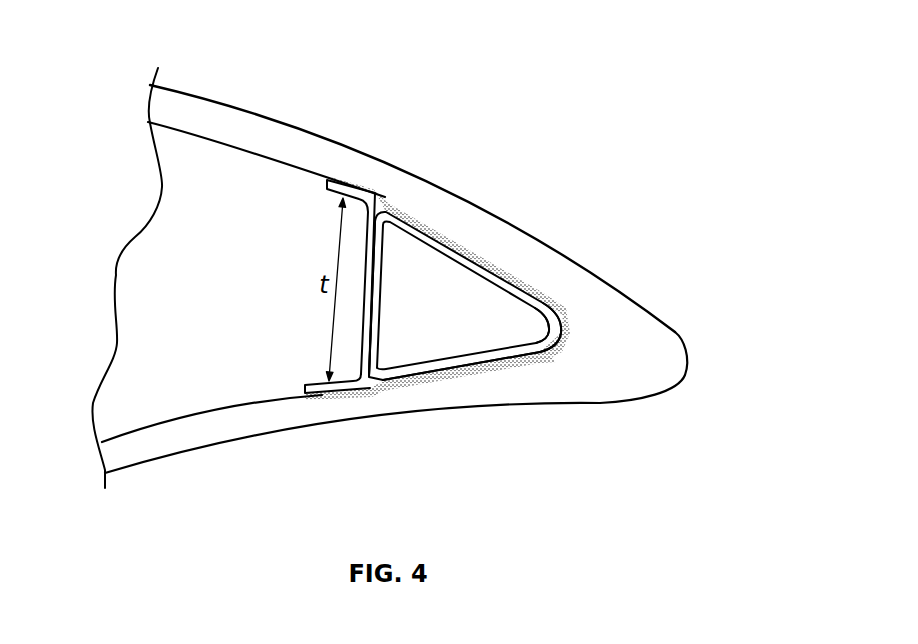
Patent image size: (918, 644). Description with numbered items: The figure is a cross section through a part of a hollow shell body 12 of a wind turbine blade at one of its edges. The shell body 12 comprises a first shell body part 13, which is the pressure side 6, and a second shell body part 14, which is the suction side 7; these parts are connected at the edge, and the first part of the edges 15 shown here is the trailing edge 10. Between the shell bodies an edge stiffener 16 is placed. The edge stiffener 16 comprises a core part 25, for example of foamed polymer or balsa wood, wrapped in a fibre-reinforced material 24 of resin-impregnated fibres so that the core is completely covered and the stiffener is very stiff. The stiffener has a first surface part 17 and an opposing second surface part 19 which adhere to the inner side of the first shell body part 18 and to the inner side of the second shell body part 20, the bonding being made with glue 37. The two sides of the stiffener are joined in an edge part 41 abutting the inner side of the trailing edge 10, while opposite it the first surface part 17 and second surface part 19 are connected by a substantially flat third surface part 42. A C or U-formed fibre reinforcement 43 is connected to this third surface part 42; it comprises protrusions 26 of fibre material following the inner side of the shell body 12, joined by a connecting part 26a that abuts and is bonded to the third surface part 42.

The pressure side 6 is at (134, 479).
The suction side 7 is at (164, 76).
The trailing edge 10 is at (687, 374).
The hollow shell body 12 is at (411, 185).
The first shell body part 13 is at (351, 451).
The second shell body part 14 is at (175, 98).
The first part of the edges 15 is at (667, 344).
The edge stiffener 16 is at (522, 281).
The first surface part 17 is at (494, 371).
The inner side of the first shell body part 18 is at (261, 401).
The second surface part 19 is at (530, 281).
The inner side of the second shell body part 20 is at (359, 293).
The fibre-reinforced material 24 is at (527, 297).
The core part 25 is at (471, 240).
The protrusions 26 is at (441, 289).
The connecting part 26a is at (450, 224).
The glue 37 is at (502, 261).
The edge part 41 is at (557, 348).
The third surface part 42 is at (379, 277).
The C or U-formed fibre reinforcement 43 is at (345, 400).